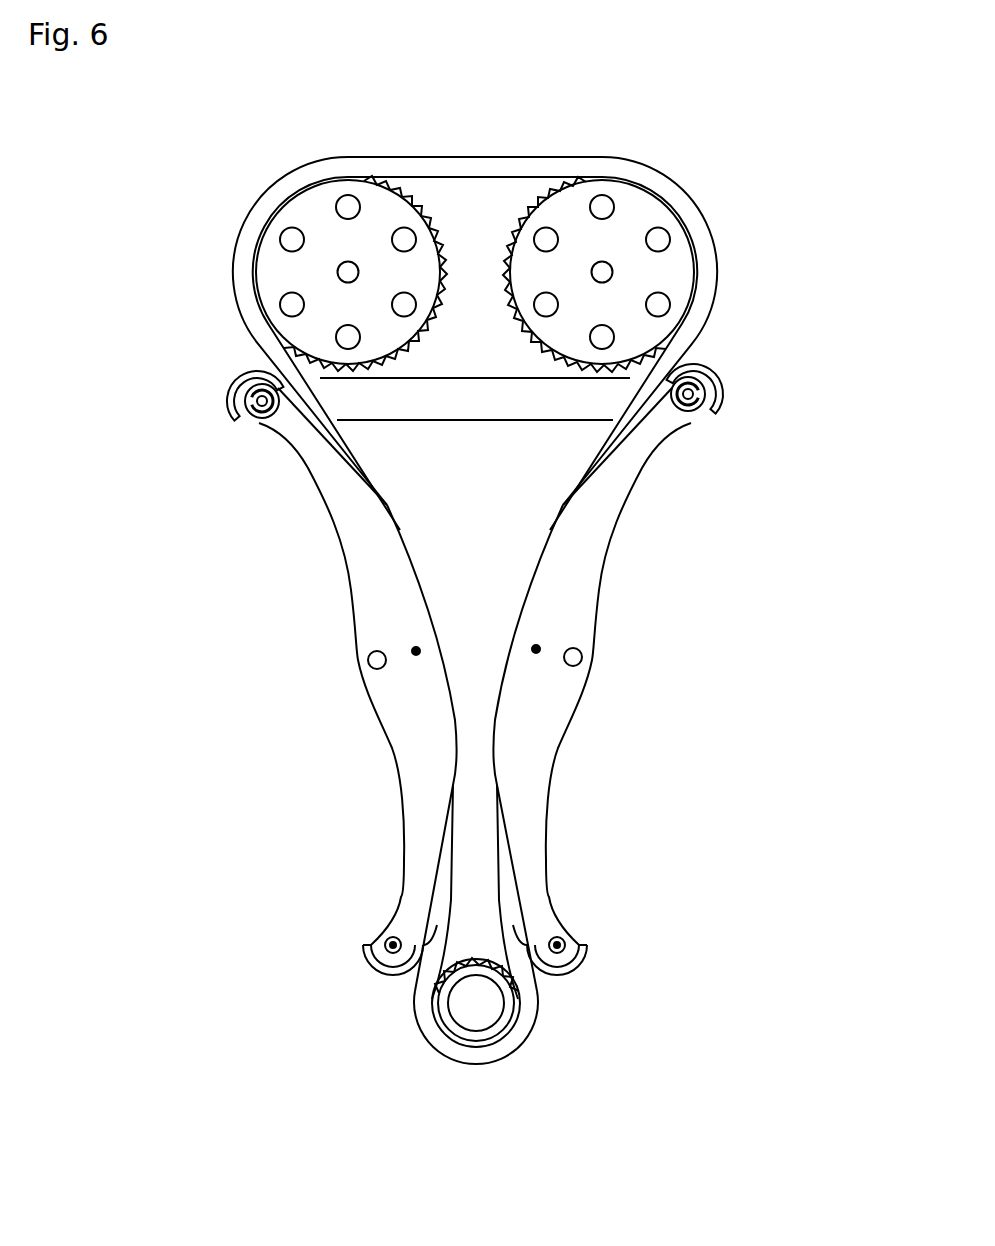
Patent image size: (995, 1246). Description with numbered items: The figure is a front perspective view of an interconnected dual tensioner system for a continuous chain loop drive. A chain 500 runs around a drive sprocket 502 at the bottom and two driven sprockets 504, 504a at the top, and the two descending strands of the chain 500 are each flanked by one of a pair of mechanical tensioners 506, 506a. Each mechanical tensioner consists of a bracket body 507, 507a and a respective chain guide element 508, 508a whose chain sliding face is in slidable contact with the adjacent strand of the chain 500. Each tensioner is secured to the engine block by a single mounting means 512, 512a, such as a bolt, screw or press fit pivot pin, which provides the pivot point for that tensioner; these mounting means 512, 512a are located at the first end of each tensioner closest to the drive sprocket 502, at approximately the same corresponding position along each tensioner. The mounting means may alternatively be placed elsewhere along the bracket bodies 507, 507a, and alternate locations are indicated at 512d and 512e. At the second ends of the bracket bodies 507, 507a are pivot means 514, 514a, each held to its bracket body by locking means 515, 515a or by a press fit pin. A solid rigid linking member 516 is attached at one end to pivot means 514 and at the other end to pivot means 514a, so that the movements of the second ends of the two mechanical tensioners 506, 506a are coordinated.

The chain 500 is at (685, 215).
The drive sprocket 502 is at (505, 995).
The driven sprocket 504 is at (637, 275).
The driven sprocket 504a is at (318, 222).
The mechanical tensioner 506 is at (614, 628).
The mechanical tensioner 506a is at (388, 812).
The bracket body 507 is at (575, 532).
The bracket body 507a is at (373, 583).
The chain guide element 508 is at (717, 378).
The chain guide element 508a is at (243, 380).
The mounting means 512 is at (560, 942).
The mounting means 512a is at (390, 943).
The alternate mounting means location 512d is at (373, 658).
The mounting hole 512e is at (577, 660).
The pivot means 514 is at (689, 399).
The pivot means 514a is at (262, 406).
The locking means 515 is at (700, 384).
The locking means 515a is at (252, 408).
The solid rigid linking member 516 is at (465, 405).